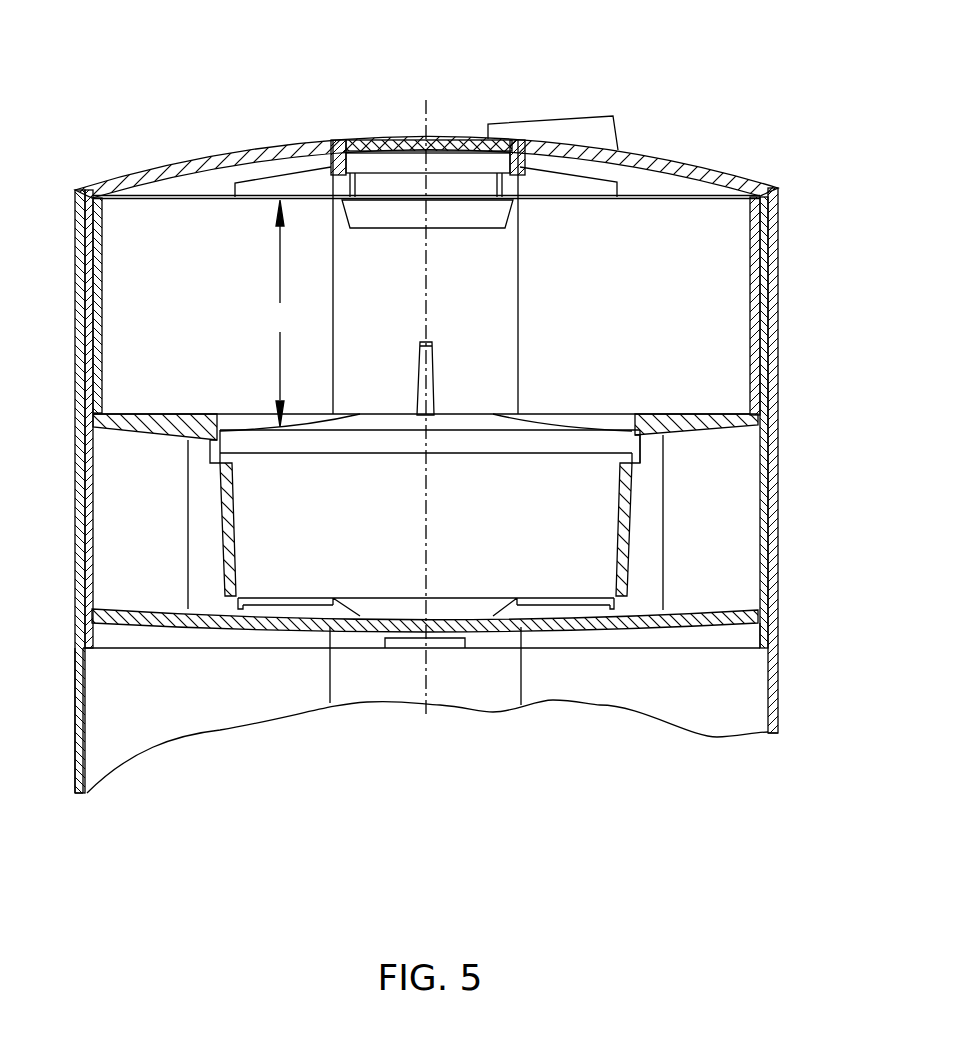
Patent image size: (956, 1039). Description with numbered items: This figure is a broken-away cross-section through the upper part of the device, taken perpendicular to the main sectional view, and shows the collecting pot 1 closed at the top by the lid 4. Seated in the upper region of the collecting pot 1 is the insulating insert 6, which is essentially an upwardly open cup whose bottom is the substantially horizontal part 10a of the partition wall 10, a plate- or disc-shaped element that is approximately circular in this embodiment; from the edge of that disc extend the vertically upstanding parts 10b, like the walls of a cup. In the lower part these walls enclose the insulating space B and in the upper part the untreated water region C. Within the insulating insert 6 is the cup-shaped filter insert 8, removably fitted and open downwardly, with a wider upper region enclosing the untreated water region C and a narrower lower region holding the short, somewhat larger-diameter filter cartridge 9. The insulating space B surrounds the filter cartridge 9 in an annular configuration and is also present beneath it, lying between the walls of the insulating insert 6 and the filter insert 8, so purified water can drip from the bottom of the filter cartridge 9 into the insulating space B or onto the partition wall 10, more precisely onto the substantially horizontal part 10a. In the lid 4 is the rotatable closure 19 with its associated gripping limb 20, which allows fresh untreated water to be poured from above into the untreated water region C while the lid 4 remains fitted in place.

The collecting pot 1 is at (774, 340).
The lid 4 is at (207, 158).
The insulating insert 6 is at (76, 295).
The filter insert 8 is at (725, 423).
The filter cartridge 9 is at (543, 440).
The partition wall 10 is at (421, 716).
The substantially horizontal part of the partition wall 10a is at (425, 643).
The vertically upstanding parts 10b is at (75, 592).
The rotatable closure 19 is at (383, 140).
The gripping limb 20 is at (586, 130).
The insulating space B is at (150, 547).
The untreated water region C is at (280, 313).